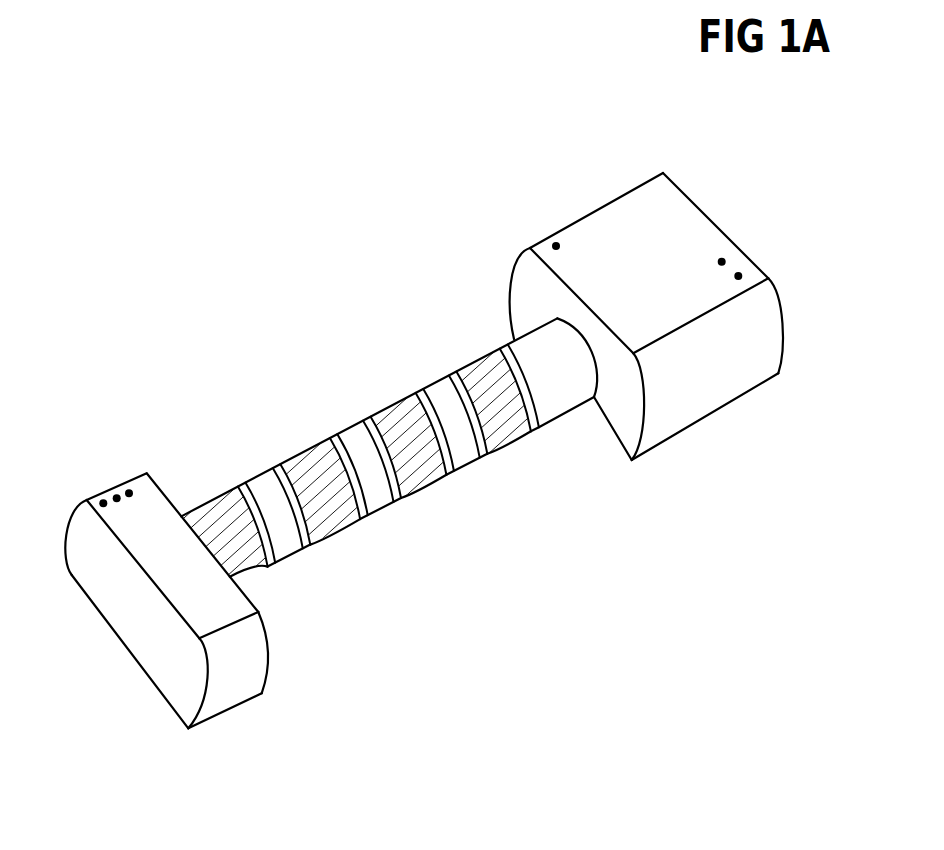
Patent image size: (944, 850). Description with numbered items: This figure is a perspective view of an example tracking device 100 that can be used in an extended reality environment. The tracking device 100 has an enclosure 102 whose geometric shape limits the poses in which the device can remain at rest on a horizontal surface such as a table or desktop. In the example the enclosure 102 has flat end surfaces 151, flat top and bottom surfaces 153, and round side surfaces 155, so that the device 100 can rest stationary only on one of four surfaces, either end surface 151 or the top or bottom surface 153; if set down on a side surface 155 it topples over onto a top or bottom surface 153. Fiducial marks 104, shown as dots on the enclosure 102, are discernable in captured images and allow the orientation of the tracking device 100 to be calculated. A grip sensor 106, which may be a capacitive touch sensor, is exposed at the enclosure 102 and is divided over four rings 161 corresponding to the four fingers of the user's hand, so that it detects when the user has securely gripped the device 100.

The tracking device 100 is at (230, 247).
The enclosure 102 is at (225, 717).
The fiducial marks 104 is at (552, 240).
The grip sensor 106 is at (499, 432).
The end surfaces 151 is at (698, 204).
The top and bottom surfaces 153 is at (627, 202).
The side surfaces 155 is at (503, 268).
The rings 161 is at (457, 371).